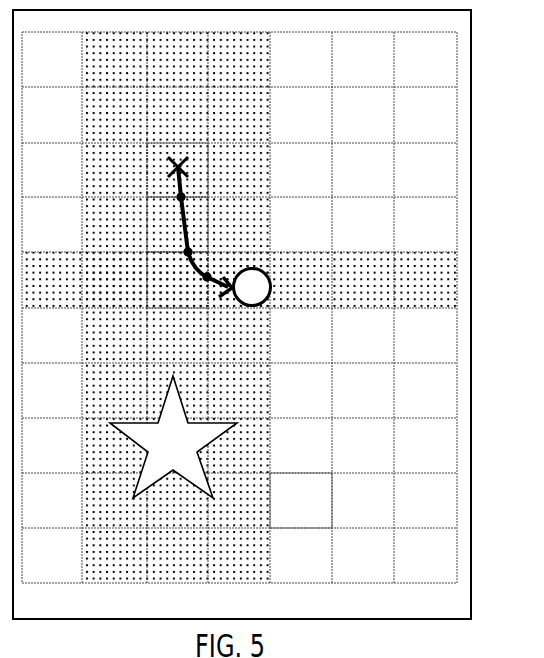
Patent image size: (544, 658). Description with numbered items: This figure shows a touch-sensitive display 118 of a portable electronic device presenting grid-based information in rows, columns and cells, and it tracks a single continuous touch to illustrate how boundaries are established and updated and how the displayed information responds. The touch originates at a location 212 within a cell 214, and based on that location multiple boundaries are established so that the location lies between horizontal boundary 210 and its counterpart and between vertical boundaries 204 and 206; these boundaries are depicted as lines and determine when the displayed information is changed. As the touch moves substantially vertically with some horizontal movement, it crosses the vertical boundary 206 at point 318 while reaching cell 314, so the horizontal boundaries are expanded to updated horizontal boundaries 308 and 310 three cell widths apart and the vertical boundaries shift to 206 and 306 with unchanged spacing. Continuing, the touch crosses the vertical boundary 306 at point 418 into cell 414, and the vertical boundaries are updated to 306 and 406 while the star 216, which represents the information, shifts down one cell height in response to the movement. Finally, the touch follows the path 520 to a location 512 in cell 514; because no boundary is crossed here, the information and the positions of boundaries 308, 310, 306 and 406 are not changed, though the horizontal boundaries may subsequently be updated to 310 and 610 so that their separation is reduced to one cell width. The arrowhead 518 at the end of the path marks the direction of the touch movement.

The touch-sensitive display 118 is at (457, 24).
The vertical boundary 204 is at (369, 143).
The vertical boundary 206 is at (369, 197).
The horizontal boundary 210 is at (207, 510).
The location 212 is at (178, 153).
The cell 214 is at (163, 148).
The star 216 is at (137, 447).
The vertical boundary 306 is at (369, 252).
The horizontal boundary 308 is at (143, 508).
The horizontal boundary 310 is at (268, 513).
The cell 314 is at (163, 202).
The point 318 is at (182, 196).
The vertical boundary 406 is at (369, 308).
The cell 414 is at (153, 265).
The point 418 is at (192, 250).
The location 512 is at (265, 290).
The cell 514 is at (263, 263).
The arrowhead 518 is at (224, 296).
The path 520 is at (206, 275).
The horizontal boundary 610 is at (330, 513).